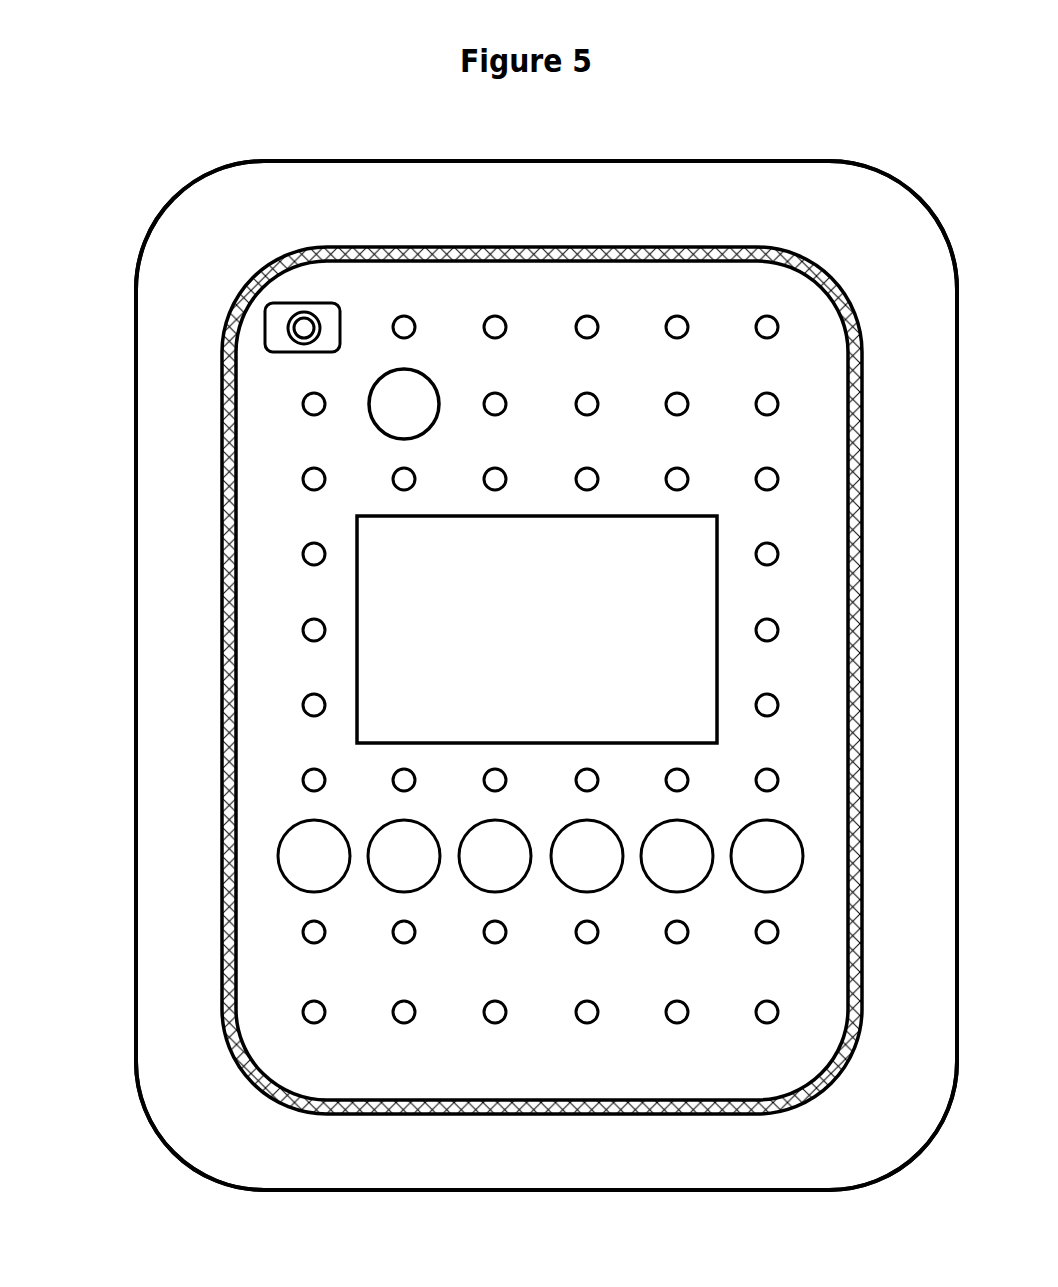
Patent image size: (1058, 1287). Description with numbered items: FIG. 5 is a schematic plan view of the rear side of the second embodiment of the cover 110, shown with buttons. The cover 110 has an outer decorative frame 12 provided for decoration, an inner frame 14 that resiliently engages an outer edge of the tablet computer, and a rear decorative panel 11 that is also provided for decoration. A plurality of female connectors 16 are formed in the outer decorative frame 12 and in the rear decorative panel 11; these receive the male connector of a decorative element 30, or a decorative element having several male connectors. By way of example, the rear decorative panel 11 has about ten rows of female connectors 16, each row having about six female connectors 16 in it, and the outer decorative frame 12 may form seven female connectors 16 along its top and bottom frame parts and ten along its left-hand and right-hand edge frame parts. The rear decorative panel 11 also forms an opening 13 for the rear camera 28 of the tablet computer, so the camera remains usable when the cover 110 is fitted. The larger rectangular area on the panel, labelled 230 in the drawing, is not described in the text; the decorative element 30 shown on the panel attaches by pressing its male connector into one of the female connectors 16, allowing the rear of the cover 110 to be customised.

The cover 110 is at (177, 170).
The outer decorative frame 12 is at (583, 215).
The inner frame 14 is at (780, 248).
The rear decorative panel 11 is at (430, 295).
The female connector 16 is at (675, 318).
The opening 13 is at (282, 303).
The rear camera 28 is at (290, 330).
The decorative element 30 is at (372, 418).
The display 230 is at (357, 563).